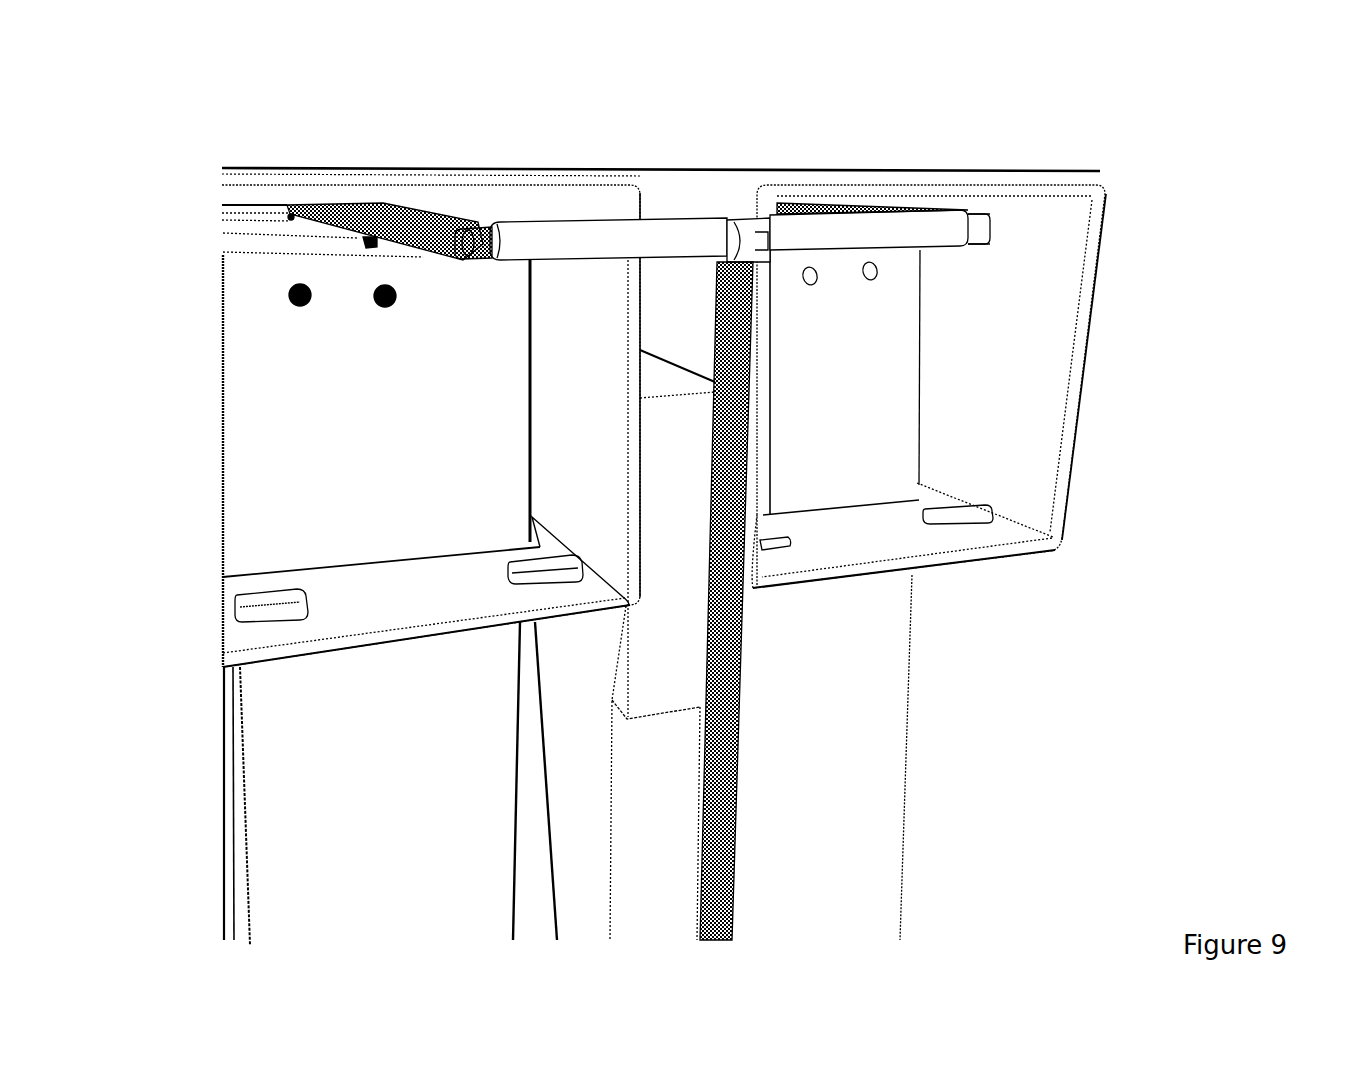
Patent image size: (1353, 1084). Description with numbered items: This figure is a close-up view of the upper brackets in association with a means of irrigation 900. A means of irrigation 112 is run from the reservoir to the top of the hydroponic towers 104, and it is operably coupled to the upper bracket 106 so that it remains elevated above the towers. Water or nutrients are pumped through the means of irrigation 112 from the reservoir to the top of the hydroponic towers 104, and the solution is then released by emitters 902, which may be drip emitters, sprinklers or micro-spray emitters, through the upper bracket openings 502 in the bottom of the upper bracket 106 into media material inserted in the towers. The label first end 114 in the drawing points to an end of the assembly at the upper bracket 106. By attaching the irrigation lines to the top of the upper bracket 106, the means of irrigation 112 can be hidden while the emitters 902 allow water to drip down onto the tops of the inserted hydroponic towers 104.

The means of irrigation 900 is at (693, 494).
The emitters 902 is at (359, 243).
The upper bracket openings 502 is at (265, 543).
The first end 114 is at (978, 278).
The upper bracket 106 is at (1017, 418).
The means of irrigation 112 is at (718, 860).
The hydroponic towers 104 is at (883, 777).